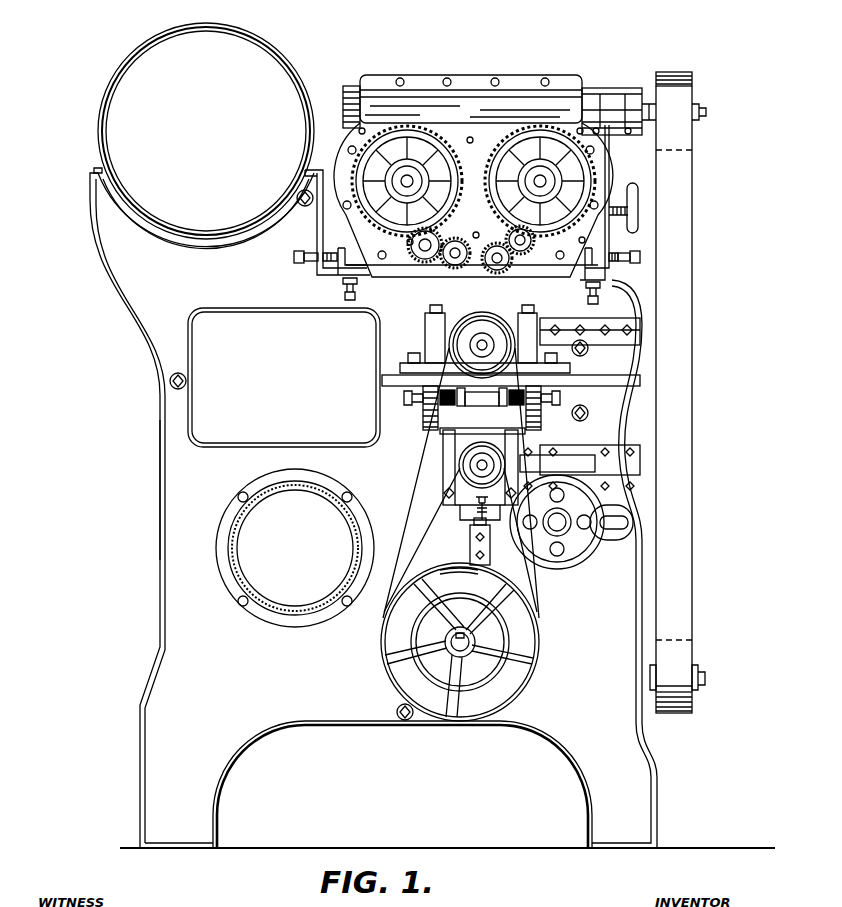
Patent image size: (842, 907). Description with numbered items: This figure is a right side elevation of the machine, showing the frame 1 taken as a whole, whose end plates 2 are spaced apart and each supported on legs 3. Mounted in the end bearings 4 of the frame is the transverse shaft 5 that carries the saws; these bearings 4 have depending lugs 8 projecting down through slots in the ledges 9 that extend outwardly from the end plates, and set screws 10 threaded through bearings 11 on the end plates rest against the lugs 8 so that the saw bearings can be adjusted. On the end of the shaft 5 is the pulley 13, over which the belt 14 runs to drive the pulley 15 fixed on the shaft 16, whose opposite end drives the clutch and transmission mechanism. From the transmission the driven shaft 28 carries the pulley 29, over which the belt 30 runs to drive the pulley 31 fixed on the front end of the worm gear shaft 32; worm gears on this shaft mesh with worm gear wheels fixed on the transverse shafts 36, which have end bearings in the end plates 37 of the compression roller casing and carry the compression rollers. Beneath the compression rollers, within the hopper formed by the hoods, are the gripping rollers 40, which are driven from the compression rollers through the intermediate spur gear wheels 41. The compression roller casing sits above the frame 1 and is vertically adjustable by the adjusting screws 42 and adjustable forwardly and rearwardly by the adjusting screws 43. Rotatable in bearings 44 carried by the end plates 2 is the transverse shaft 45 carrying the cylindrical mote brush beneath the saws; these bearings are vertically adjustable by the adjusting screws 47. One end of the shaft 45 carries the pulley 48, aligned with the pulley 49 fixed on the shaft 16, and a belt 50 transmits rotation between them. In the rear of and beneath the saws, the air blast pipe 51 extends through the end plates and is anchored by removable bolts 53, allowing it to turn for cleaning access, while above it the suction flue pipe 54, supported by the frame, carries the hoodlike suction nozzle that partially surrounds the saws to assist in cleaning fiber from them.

The frame 1 is at (138, 300).
The end plates 2 is at (166, 585).
The legs 3 is at (215, 800).
The end bearings 4 is at (522, 312).
The transverse shaft 5 is at (482, 335).
The depending lugs 8 is at (450, 406).
The ledges 9 is at (568, 378).
The set screws 10 is at (406, 404).
The bearings 11 is at (423, 412).
The pulley 13 is at (456, 350).
The belt 14 is at (414, 498).
The pulley 15 is at (537, 650).
The shaft 16 is at (458, 644).
The driven shaft 28 is at (705, 680).
The pulley 29 is at (680, 642).
The belt 30 is at (692, 487).
The pulley 31 is at (692, 150).
The worm gear shaft 32 is at (706, 112).
The transverse shafts 36 is at (428, 180).
The end plates 37 is at (352, 147).
The gripping rollers 40 is at (512, 262).
The intermediate spur gear wheels 41 is at (440, 232).
The adjusting screws 42 is at (344, 295).
The adjusting screws 43 is at (300, 248).
The bearings 44 is at (476, 512).
The transverse shaft 45 is at (470, 465).
The adjusting screws 47 is at (470, 545).
The pulley 48 is at (478, 440).
The pulley 49 is at (485, 680).
The belt 50 is at (428, 548).
The air blast pipe 51 is at (300, 482).
The bolts 53 is at (240, 493).
The suction flue pipe 54 is at (292, 82).